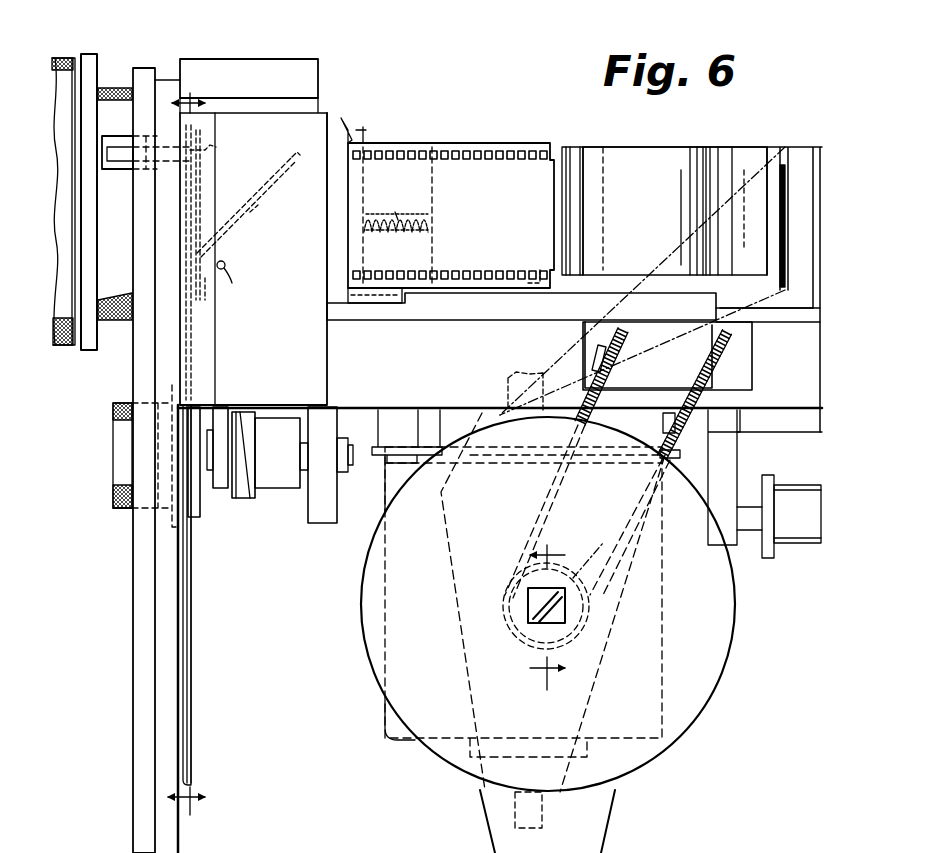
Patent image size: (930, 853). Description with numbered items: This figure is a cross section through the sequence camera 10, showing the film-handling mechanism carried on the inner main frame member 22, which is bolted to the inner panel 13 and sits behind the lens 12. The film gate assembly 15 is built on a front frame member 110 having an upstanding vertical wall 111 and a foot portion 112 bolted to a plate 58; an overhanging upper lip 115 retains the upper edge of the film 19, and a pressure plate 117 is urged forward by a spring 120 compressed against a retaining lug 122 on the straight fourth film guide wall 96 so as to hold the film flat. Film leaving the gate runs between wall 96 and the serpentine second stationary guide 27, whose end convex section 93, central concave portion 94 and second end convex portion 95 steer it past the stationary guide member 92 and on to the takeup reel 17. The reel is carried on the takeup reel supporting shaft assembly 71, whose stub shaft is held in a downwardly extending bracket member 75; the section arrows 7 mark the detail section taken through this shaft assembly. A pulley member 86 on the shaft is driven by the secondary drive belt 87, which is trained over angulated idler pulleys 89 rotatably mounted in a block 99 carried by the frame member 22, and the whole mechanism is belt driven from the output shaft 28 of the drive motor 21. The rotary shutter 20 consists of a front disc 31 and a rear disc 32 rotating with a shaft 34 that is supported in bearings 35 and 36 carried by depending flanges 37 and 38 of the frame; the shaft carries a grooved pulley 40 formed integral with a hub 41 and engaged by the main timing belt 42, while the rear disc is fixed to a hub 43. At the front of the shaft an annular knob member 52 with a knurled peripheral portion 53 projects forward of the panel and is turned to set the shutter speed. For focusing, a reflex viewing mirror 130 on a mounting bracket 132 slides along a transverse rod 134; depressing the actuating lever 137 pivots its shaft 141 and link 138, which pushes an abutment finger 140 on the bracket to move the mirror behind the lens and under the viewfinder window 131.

The section line 7- 7 is at (551, 612).
The sequence camera 10 is at (196, 449).
The lens 12 is at (82, 47).
The inner panel 13 is at (146, 75).
The film gate assembly 15 is at (364, 120).
The takeup reel 17 is at (719, 639).
The film 19 is at (474, 172).
The rotary shutter 20 is at (193, 630).
The drive motor 21 is at (662, 707).
The main frame member 22 is at (430, 366).
The second stationary guide 27 is at (658, 157).
The output shaft 28 is at (521, 380).
The front disc 31 is at (183, 695).
The rear disc 32 is at (192, 670).
The shaft 34 is at (353, 463).
The bearing 35 is at (343, 480).
The bearing 36 is at (208, 480).
The depending flange 37 is at (329, 513).
The depending flange 38 is at (224, 490).
The grooved pulley 40 is at (257, 499).
The hub 41 is at (283, 486).
The main timing belt 42 is at (243, 463).
The hub 43 is at (199, 518).
The annular knob member 52 is at (113, 468).
The knurled peripheral portion 53 is at (116, 512).
The plate 58 is at (817, 313).
The takeup reel supporting shaft assembly 71 is at (535, 607).
The bracket member 75 is at (600, 840).
The pulley member 86 is at (595, 553).
The secondary drive belt 87 is at (700, 397).
The angulated idler pulleys 89 is at (620, 332).
The stationary guide member 92 is at (822, 177).
The end convex section 93 is at (746, 149).
The central concave portion 94 is at (672, 257).
The second end convex portion 95 is at (587, 153).
The fourth film guide wall 96 is at (605, 194).
The block 99 is at (648, 355).
The front frame member 110 is at (332, 236).
The upstanding vertical wall 111 is at (335, 196).
The foot portion 112 is at (360, 302).
The overhanging upper lip 115 is at (346, 133).
The pressure plate 117 is at (366, 136).
The spring 120 is at (396, 210).
The retaining lug 122 is at (434, 224).
The reflex viewing mirror 130 is at (264, 176).
The window 131 is at (288, 60).
The mounting bracket 132 is at (250, 210).
The transverse rod 134 is at (241, 280).
The actuating lever 137 is at (123, 156).
The link 138 is at (214, 182).
The abutment finger 140 is at (210, 298).
The shaft 141 is at (217, 148).